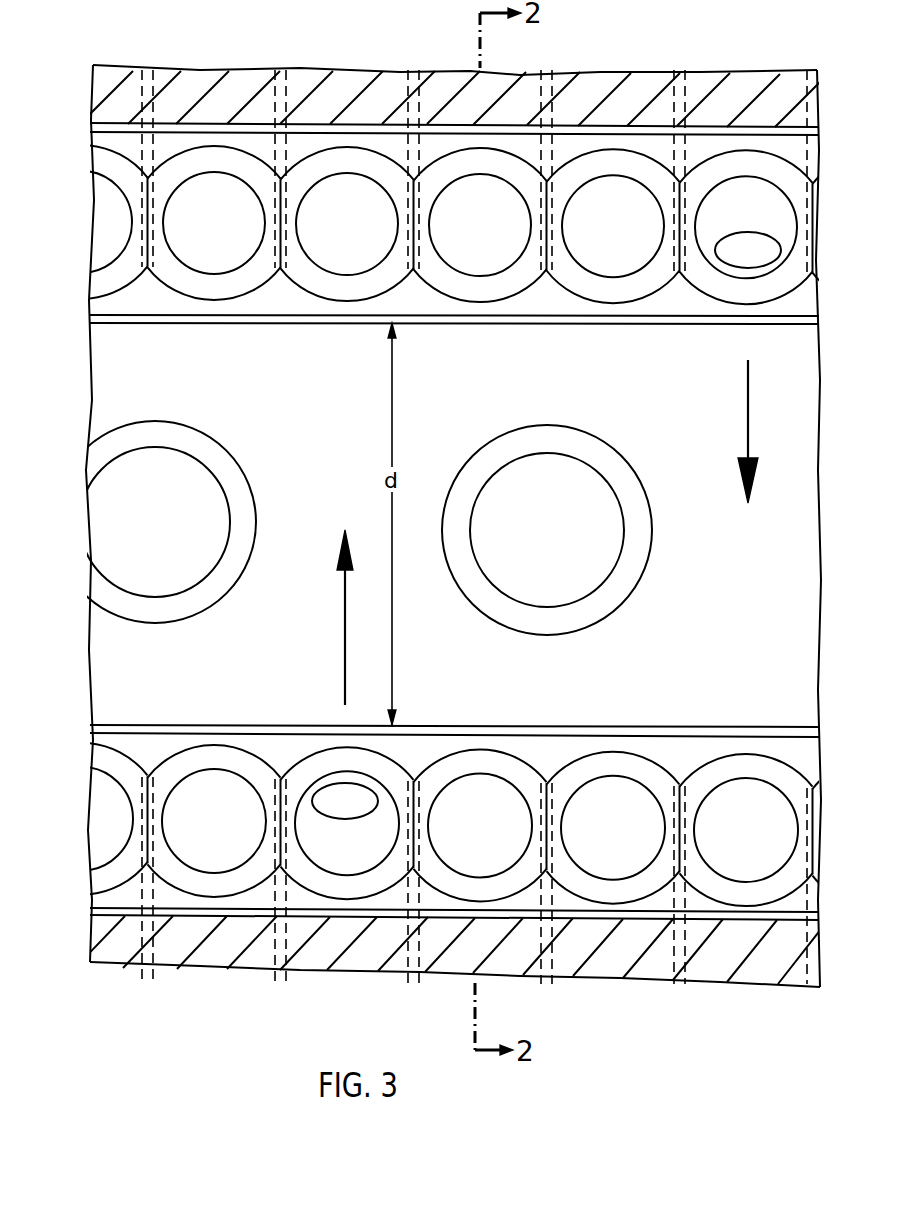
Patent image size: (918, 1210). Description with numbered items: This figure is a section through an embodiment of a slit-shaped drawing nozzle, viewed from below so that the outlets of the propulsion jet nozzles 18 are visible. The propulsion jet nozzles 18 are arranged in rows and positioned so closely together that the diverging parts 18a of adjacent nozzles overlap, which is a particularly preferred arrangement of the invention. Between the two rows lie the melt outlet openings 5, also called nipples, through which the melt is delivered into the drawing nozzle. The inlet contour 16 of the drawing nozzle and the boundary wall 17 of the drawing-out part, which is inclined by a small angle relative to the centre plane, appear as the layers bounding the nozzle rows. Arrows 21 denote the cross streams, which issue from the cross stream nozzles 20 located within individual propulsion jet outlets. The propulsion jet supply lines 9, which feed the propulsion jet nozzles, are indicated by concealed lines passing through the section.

The melt outlet openings 5 is at (210, 462).
The propulsion jet supply lines 9 is at (307, 963).
The inlet contour 16 is at (732, 732).
The boundary wall 17 is at (712, 927).
The propulsion jet nozzles 18 is at (605, 853).
The diverging parts of the propulsion jet nozzles 18a is at (645, 880).
The cross stream nozzles 20 is at (770, 246).
The arrows denoting cross streams 21 is at (346, 636).